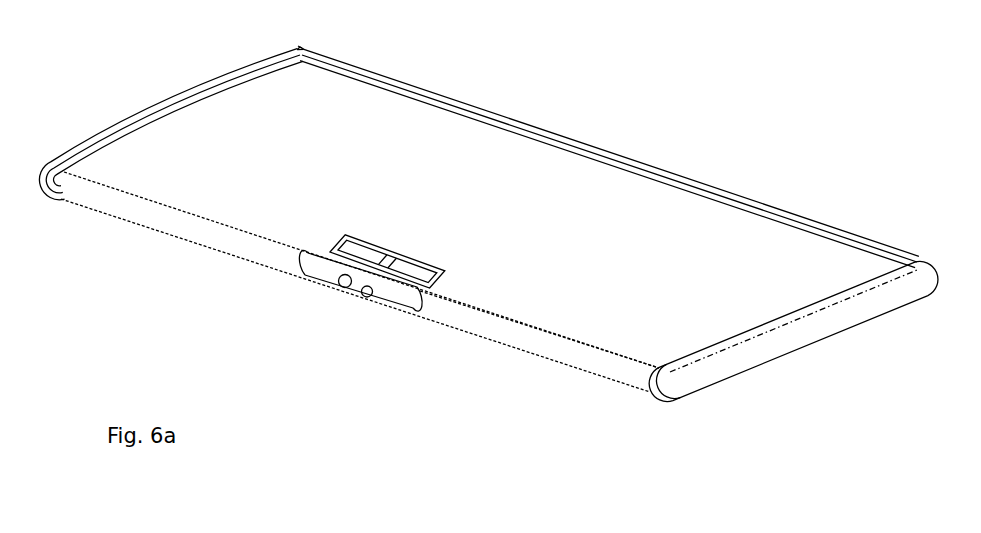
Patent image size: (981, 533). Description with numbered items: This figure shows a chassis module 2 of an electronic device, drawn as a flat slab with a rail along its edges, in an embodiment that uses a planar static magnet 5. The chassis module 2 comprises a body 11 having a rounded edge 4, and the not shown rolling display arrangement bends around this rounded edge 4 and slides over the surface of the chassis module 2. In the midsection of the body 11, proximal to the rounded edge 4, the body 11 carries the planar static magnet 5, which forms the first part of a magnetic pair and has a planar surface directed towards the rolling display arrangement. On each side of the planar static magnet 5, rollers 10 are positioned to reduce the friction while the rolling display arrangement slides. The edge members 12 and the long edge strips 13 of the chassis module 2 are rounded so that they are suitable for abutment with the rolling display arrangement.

The chassis module 2 is at (588, 183).
The rounded edge 4 is at (112, 195).
The planar static magnet 5 is at (382, 258).
The rollers 10 is at (420, 267).
The body 11 is at (437, 283).
The rail 12 is at (188, 94).
The edge strip 13 is at (417, 87).